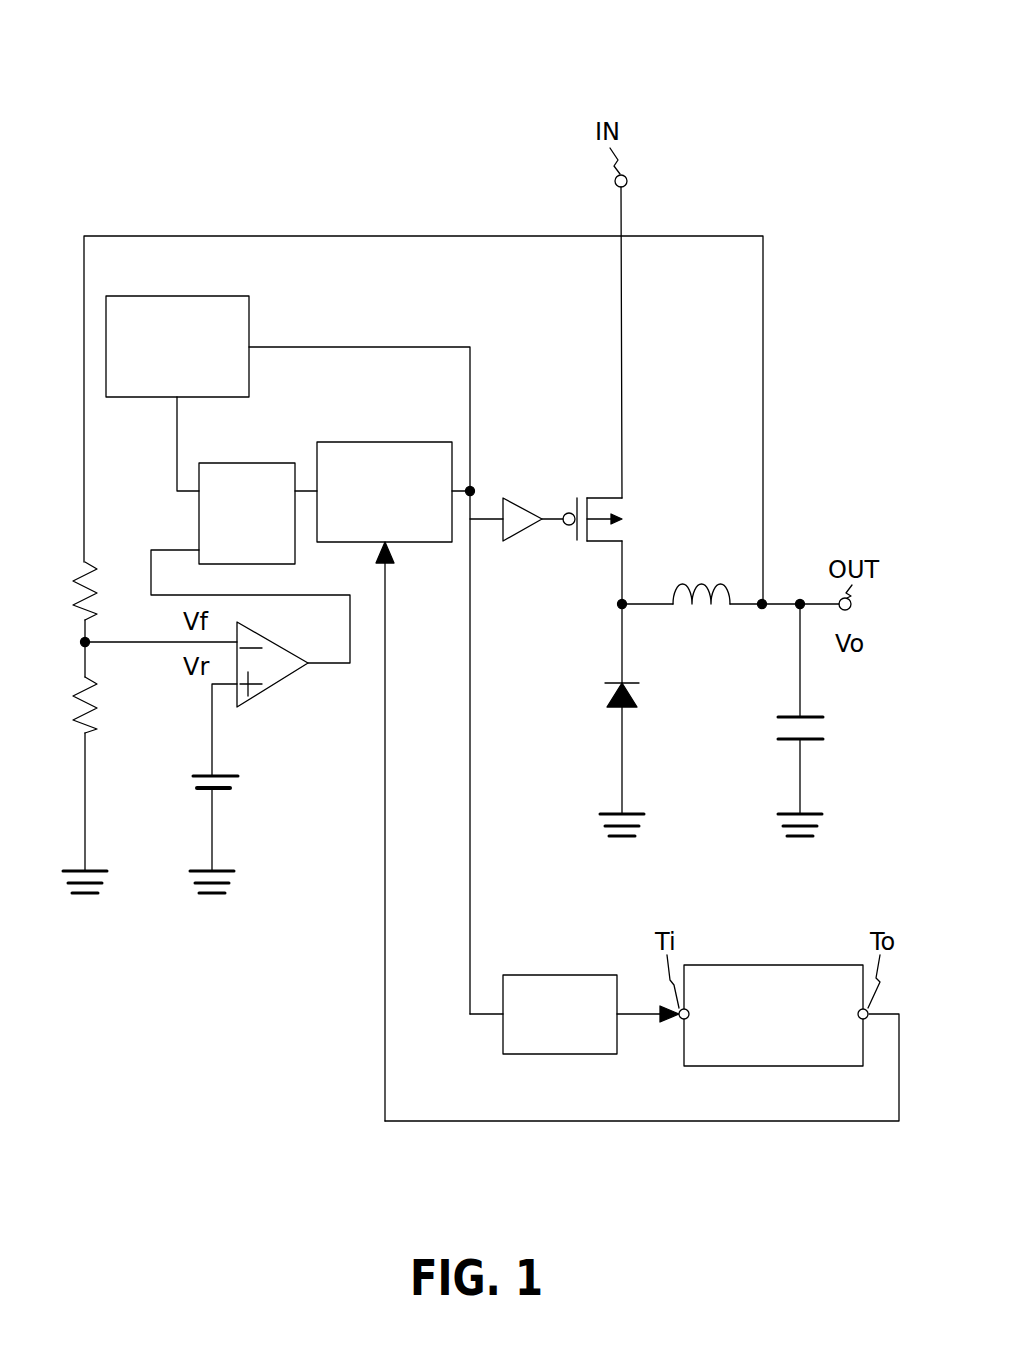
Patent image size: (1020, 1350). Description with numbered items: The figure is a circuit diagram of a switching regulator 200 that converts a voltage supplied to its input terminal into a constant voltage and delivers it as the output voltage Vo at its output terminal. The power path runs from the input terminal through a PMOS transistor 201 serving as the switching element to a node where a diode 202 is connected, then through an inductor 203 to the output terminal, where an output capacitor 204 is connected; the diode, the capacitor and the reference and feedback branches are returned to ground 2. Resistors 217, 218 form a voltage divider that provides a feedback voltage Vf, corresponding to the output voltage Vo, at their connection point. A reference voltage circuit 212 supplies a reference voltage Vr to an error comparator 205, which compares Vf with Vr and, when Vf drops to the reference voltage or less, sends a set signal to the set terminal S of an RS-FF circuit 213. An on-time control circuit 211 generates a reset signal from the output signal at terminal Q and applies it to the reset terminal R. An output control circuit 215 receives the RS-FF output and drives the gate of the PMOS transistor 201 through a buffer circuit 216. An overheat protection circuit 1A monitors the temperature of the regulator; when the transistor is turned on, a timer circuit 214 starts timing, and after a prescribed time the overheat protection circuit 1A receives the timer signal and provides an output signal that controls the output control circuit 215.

The switching regulator 200 is at (777, 26).
The on-time control circuit 211 is at (190, 323).
The RS-FF circuit 213 is at (247, 490).
The output control circuit 215 is at (384, 468).
The buffer circuit 216 is at (534, 549).
The PMOS transistor 201 is at (579, 491).
The inductor 203 is at (730, 562).
The diode 202 is at (589, 735).
The output capacitor 204 is at (781, 709).
The resistor 217 is at (60, 564).
The resistor 218 is at (62, 735).
The error comparator 205 is at (277, 688).
The reference voltage circuit 212 is at (196, 777).
The timer circuit 214 is at (560, 990).
The overheat protection circuit 1A is at (773, 988).
The ground 2 is at (436, 828).